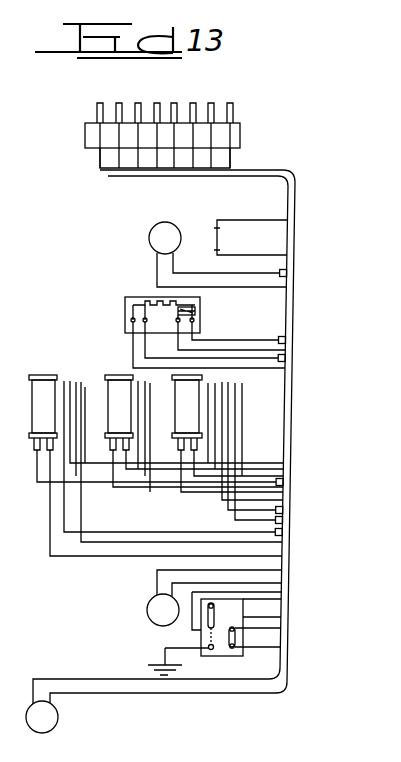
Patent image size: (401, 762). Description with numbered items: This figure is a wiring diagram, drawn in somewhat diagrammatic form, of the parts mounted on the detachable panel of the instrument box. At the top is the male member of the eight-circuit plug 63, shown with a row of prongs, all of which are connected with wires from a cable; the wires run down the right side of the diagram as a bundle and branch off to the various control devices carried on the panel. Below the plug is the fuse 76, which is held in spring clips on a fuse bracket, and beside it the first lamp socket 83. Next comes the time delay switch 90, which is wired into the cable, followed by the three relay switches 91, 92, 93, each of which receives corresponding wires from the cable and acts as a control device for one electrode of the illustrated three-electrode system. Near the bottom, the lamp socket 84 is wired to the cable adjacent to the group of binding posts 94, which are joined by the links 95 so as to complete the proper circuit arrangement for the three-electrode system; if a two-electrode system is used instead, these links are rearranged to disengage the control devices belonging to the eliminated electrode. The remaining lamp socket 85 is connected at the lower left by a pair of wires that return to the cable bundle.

The eight-circuit plug 63 is at (248, 150).
The fuse 76 is at (219, 238).
The lamp socket 83 is at (168, 238).
The lamp socket 84 is at (158, 611).
The lamp socket 85 is at (48, 717).
The time delay switch 90 is at (133, 298).
The relay switch 91 is at (43, 388).
The relay switch 92 is at (118, 390).
The relay switch 93 is at (188, 400).
The binding posts 94 is at (205, 637).
The links 95 is at (207, 616).